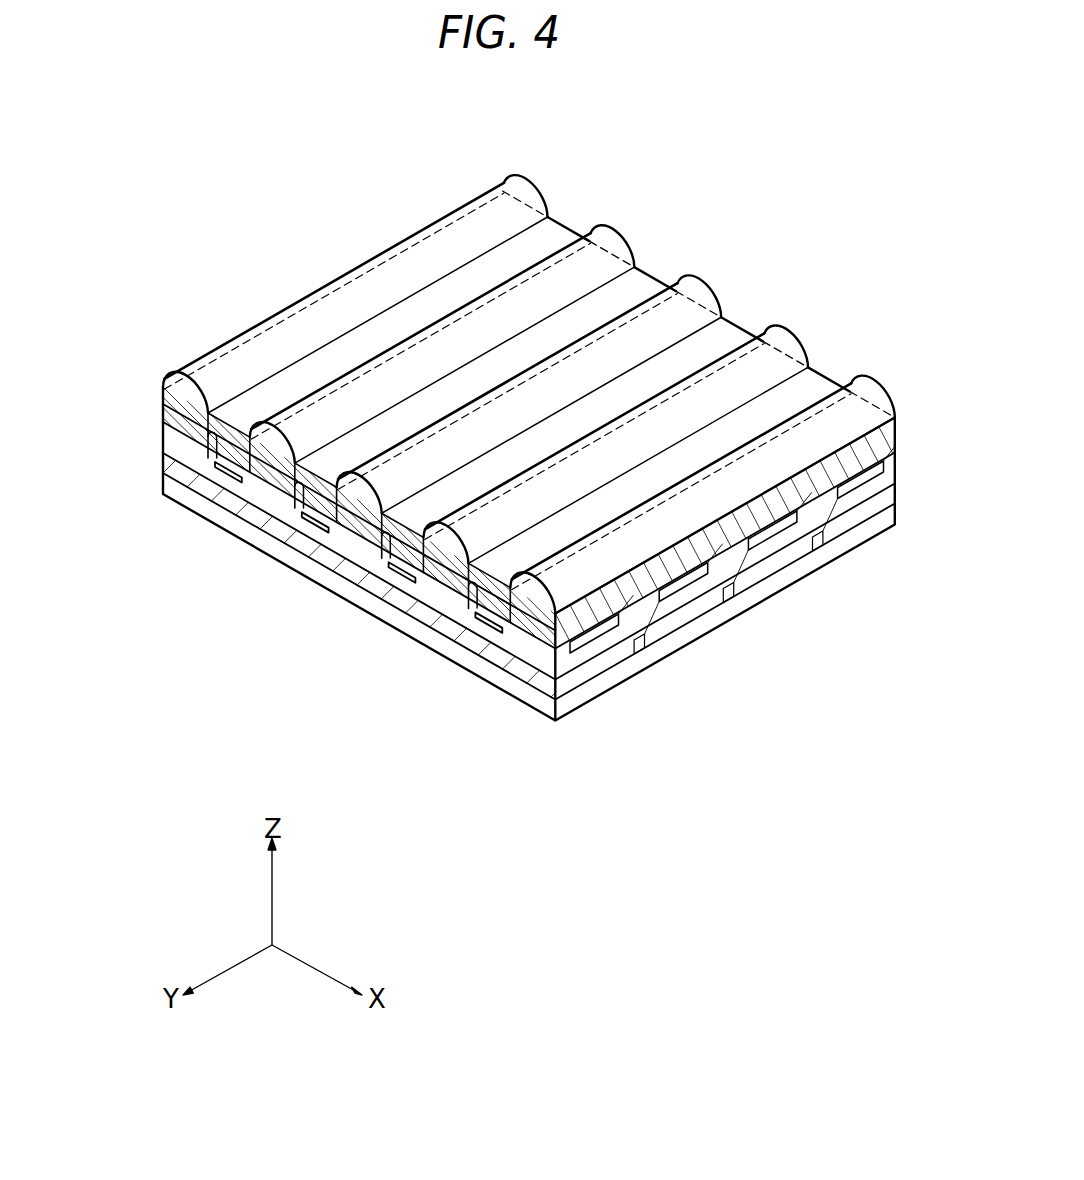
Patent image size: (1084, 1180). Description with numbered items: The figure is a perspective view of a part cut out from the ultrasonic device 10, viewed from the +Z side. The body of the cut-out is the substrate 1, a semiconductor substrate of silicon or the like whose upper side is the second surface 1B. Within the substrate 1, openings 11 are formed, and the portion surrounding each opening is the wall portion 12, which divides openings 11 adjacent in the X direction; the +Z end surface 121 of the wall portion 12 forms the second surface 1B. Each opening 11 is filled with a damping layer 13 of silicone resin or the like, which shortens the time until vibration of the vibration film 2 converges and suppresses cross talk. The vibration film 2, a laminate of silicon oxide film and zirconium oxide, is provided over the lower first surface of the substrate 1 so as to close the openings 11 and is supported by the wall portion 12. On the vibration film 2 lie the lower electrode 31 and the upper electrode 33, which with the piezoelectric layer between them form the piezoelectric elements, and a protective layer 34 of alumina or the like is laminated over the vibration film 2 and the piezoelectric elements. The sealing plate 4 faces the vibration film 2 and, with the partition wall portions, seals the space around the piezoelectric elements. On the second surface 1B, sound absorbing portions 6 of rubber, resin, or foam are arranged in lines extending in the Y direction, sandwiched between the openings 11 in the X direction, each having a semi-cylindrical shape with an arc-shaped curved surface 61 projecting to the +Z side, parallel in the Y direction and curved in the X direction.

The ultrasonic device 10 is at (138, 582).
The substrate 1 is at (172, 405).
The second surface 1B is at (497, 215).
The vibration film 2 is at (172, 432).
The sealing plate 4 is at (176, 493).
The sound absorbing portion 6 is at (871, 398).
The curved surface 61 is at (451, 245).
The end surface 121 is at (690, 315).
The opening 11 is at (485, 600).
The wall portion 12 is at (530, 628).
The damping layer 13 is at (545, 540).
The lower electrode 31 is at (404, 580).
The upper electrode 33 is at (692, 588).
The protective layer 34 is at (742, 563).